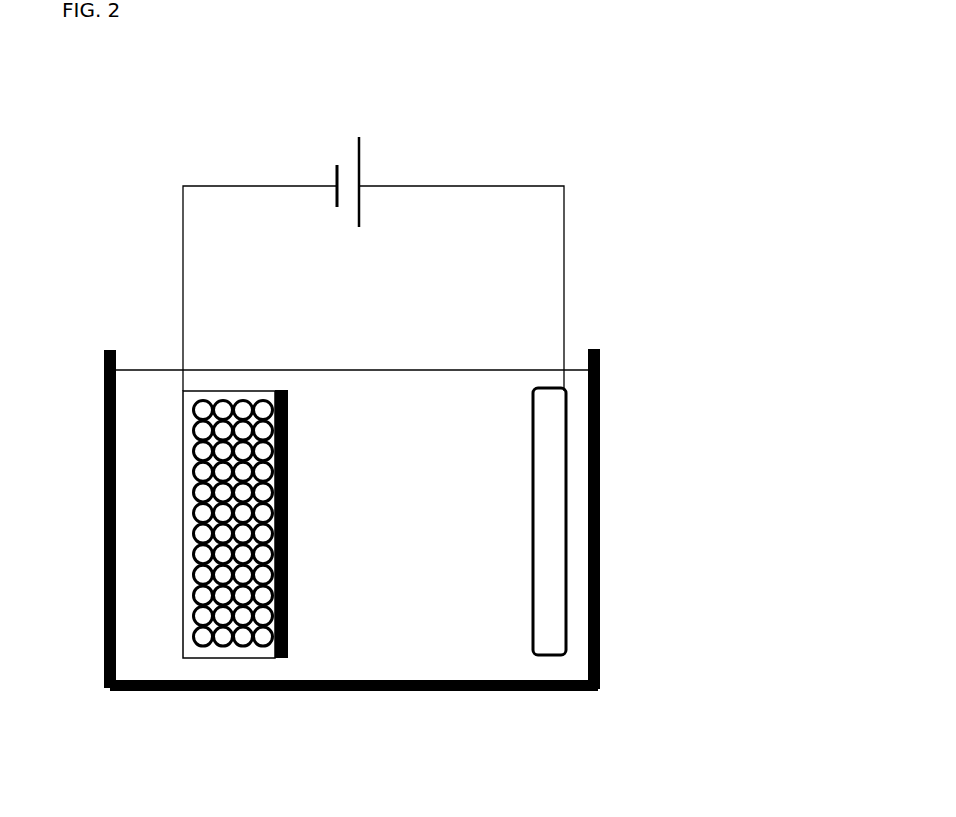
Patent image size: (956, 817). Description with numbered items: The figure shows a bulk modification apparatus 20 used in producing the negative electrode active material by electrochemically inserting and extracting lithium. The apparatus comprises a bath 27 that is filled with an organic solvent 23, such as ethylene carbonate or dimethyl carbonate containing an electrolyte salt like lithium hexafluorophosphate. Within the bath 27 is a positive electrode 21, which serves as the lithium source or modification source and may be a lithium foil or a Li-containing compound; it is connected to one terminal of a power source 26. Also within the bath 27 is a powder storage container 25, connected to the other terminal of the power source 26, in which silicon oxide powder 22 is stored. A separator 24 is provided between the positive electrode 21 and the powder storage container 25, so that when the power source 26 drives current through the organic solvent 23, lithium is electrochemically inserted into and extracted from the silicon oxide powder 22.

The bulk modification apparatus 20 is at (132, 112).
The positive electrode 21 is at (545, 458).
The silicon oxide powder 22 is at (228, 602).
The organic solvent 23 is at (405, 403).
The separator 24 is at (300, 427).
The powder storage container 25 is at (222, 397).
The power source 26 is at (382, 110).
The bath 27 is at (505, 705).